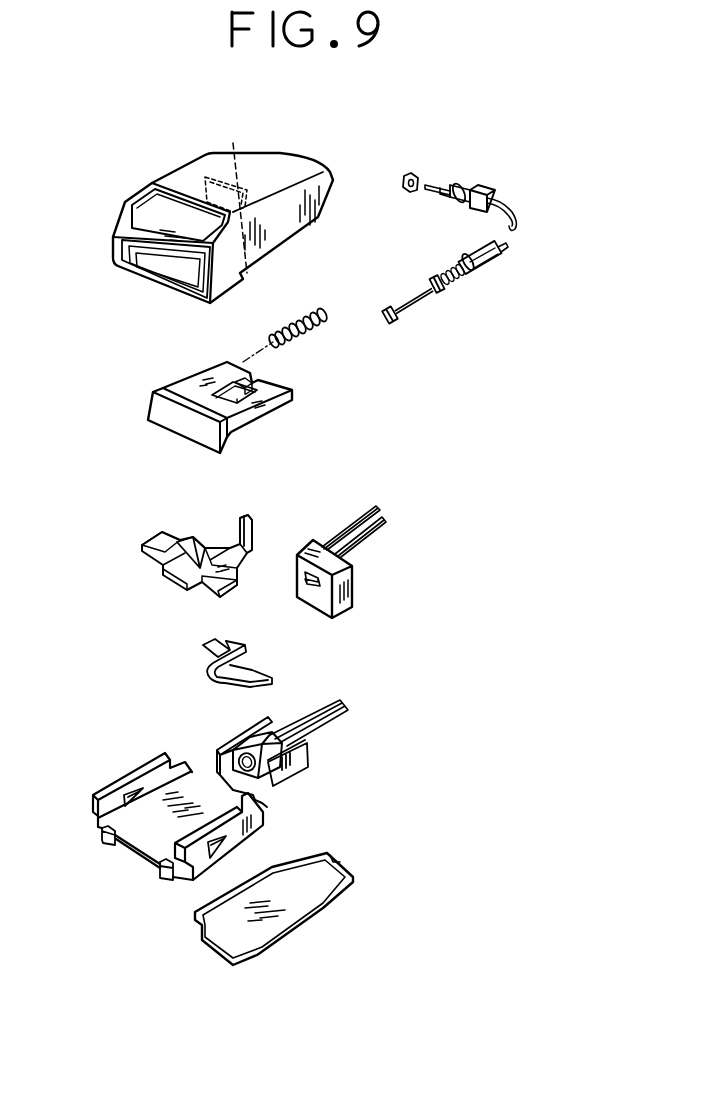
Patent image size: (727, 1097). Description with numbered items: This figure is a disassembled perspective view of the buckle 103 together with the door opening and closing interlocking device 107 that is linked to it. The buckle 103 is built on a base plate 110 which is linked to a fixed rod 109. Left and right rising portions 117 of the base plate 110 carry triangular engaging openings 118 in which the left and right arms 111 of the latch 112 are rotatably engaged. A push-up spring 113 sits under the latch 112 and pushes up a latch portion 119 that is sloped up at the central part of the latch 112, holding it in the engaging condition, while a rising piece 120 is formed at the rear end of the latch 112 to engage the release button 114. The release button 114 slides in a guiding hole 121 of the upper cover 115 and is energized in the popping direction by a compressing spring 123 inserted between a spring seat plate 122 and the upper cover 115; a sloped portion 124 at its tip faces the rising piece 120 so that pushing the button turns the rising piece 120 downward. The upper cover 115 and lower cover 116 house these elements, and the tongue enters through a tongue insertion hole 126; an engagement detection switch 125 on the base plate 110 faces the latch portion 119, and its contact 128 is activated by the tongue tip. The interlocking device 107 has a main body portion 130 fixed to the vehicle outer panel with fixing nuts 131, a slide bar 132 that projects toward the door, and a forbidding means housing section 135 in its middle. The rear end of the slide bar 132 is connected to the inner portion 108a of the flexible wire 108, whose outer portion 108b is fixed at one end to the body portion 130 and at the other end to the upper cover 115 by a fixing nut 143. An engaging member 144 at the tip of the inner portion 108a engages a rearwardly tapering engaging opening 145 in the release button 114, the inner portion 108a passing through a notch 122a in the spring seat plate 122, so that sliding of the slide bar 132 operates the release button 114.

The buckle 103 is at (331, 124).
The door opening and closing interlocking device 107 is at (506, 255).
The flexible wire 108 is at (521, 210).
The inner portion of the flexible wire 108a is at (455, 281).
The outer portion of the flexible wire 108b is at (520, 218).
The fixed rod 109 is at (327, 723).
The base plate 110 is at (108, 780).
The left and right arms 111 is at (153, 536).
The latch 112 is at (170, 570).
The push-up spring 113 is at (205, 672).
The release button 114 is at (192, 380).
The upper cover 115 is at (187, 162).
The lower cover 116 is at (300, 937).
The left and right rising portions 117 is at (100, 808).
The triangular engaging openings 118 is at (142, 790).
The latch portion 119 is at (182, 552).
The rising piece 120 is at (247, 513).
The guiding hole 121 is at (177, 212).
The spring seat plate 122 is at (233, 143).
The notch 122a is at (262, 221).
The compressing spring 123 is at (313, 312).
The sloped portion 124 is at (293, 403).
The engagement detection switch 125 is at (358, 586).
The tongue insertion hole 126 is at (180, 262).
The contact 128 is at (315, 590).
The main body portion 130 is at (462, 188).
The fixing nuts 131 is at (403, 190).
The slide bar 132 is at (442, 185).
The forbidding means housing section 135 is at (488, 198).
The fixing nut 143 is at (443, 288).
The engaging member 144 is at (392, 318).
The engaging opening 145 is at (235, 397).